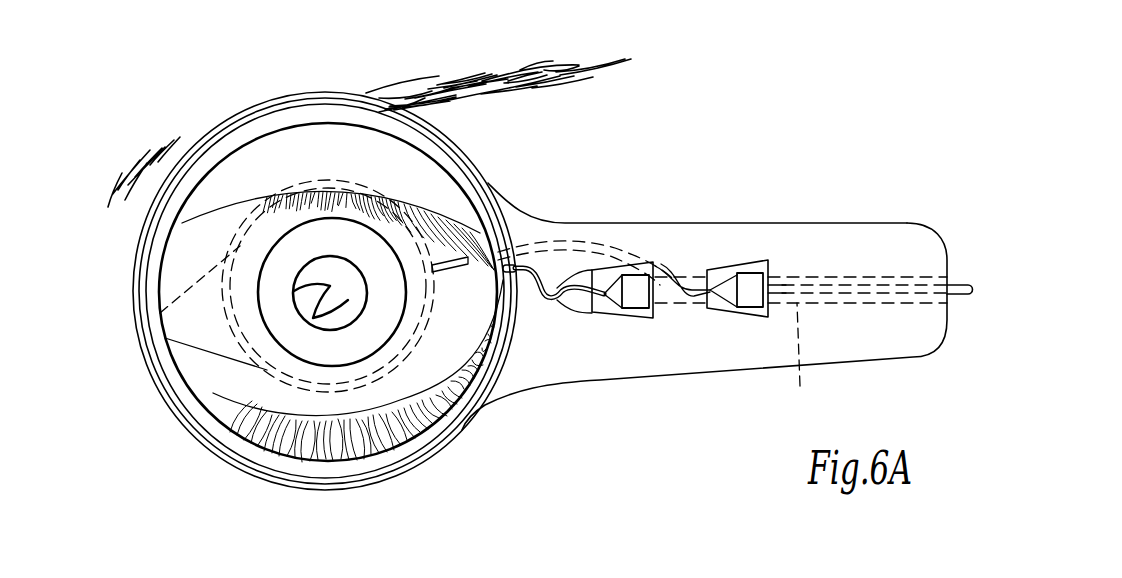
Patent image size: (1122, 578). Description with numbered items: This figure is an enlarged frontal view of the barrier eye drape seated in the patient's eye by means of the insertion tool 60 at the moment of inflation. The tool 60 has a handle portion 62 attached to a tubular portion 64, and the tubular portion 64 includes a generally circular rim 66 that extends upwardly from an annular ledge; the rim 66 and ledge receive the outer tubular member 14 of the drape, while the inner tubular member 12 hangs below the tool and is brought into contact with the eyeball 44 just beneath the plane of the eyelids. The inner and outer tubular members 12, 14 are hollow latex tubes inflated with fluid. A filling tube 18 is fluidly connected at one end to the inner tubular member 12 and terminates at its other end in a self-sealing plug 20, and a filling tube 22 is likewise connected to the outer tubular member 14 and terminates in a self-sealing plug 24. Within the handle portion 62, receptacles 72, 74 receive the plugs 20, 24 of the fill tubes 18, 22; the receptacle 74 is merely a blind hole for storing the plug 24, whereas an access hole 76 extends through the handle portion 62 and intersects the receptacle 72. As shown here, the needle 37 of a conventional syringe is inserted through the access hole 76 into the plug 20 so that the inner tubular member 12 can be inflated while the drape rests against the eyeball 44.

The inner tubular member 12 is at (342, 182).
The outer tubular member 14 is at (274, 120).
The filling tube 18 is at (614, 247).
The self-sealing plug 20 is at (748, 284).
The filling tube 22 is at (545, 303).
The self-sealing plug 24 is at (630, 303).
The needle 37 is at (967, 297).
The eyeball 44 is at (267, 311).
The tool 60 is at (717, 162).
The handle portion 62 is at (722, 390).
The tubular portion 64 is at (458, 497).
The circular rim 66 is at (476, 160).
The receptacle 72 is at (733, 270).
The receptacle 74 is at (591, 268).
The access hole 76 is at (799, 385).